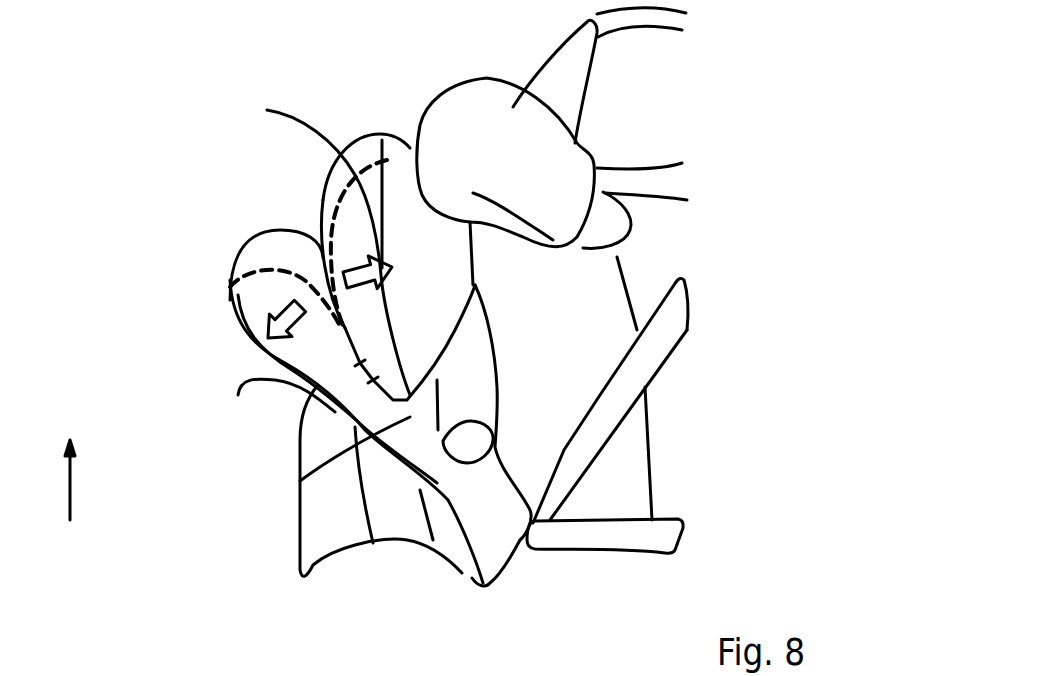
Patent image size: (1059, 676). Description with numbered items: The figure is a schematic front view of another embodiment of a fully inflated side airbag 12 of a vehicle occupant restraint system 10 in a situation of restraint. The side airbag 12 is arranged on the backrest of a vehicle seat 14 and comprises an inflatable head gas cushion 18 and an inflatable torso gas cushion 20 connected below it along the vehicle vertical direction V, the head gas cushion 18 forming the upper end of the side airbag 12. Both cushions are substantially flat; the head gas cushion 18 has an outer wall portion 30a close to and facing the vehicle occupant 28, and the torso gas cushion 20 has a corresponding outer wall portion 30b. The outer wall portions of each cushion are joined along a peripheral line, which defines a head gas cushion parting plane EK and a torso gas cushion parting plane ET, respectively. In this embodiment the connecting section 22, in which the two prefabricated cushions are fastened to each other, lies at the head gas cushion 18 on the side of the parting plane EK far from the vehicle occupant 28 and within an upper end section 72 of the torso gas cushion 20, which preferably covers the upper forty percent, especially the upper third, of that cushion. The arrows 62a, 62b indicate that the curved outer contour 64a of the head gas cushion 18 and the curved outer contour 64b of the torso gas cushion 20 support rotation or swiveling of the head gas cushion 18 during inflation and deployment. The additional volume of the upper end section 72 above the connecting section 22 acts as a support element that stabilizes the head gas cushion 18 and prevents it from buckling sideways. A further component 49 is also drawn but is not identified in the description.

The vehicle occupant restraint system 10 is at (160, 141).
The side airbag 12 is at (347, 153).
The vehicle seat 14 is at (637, 87).
The head gas cushion 18 is at (397, 160).
The torso gas cushion 20 is at (252, 302).
The connecting section 22 is at (355, 378).
The vehicle occupant 28 is at (507, 115).
The outer wall portion of the head gas cushion close to the vehicle occupant 30a is at (418, 200).
The outer wall portion of the torso gas cushion close to the vehicle occupant 30b is at (300, 481).
The pedal lever 49 is at (673, 325).
The arrow 62a is at (321, 222).
The arrow 62b is at (252, 331).
The curved outer contour of the head gas cushion 64a is at (352, 173).
The curved outer contour of the torso gas cushion 64b is at (253, 290).
The upper end section of the torso gas cushion 72 is at (200, 307).
The head gas cushion parting plane EK is at (319, 238).
The torso gas cushion parting plane ET is at (271, 405).
The vehicle vertical direction V is at (70, 487).